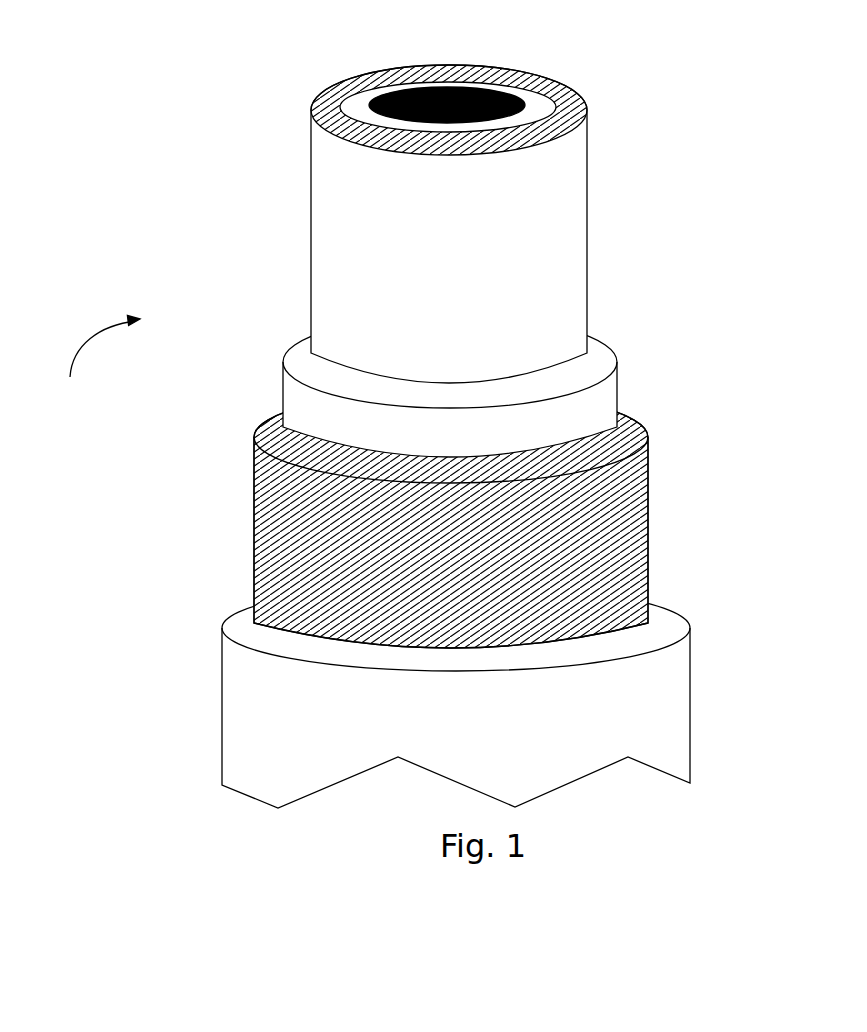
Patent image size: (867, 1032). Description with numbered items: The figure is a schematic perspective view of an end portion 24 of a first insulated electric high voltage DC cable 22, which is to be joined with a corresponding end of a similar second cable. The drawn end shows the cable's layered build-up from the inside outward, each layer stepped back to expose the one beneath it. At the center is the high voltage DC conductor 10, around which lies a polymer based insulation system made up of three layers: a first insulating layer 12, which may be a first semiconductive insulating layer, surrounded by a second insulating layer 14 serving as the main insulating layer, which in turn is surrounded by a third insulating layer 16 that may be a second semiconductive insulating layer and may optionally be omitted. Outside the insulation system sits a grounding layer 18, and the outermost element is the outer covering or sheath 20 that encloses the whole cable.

The high voltage DC conductor 10 is at (470, 92).
The first insulating layer 12 is at (543, 107).
The second insulating layer 14 is at (588, 118).
The third insulating layer 16 is at (617, 398).
The grounding layer 18 is at (648, 510).
The outer covering or sheath 20 is at (690, 668).
The DC cable 22 is at (135, 534).
The end portion 24 is at (96, 365).